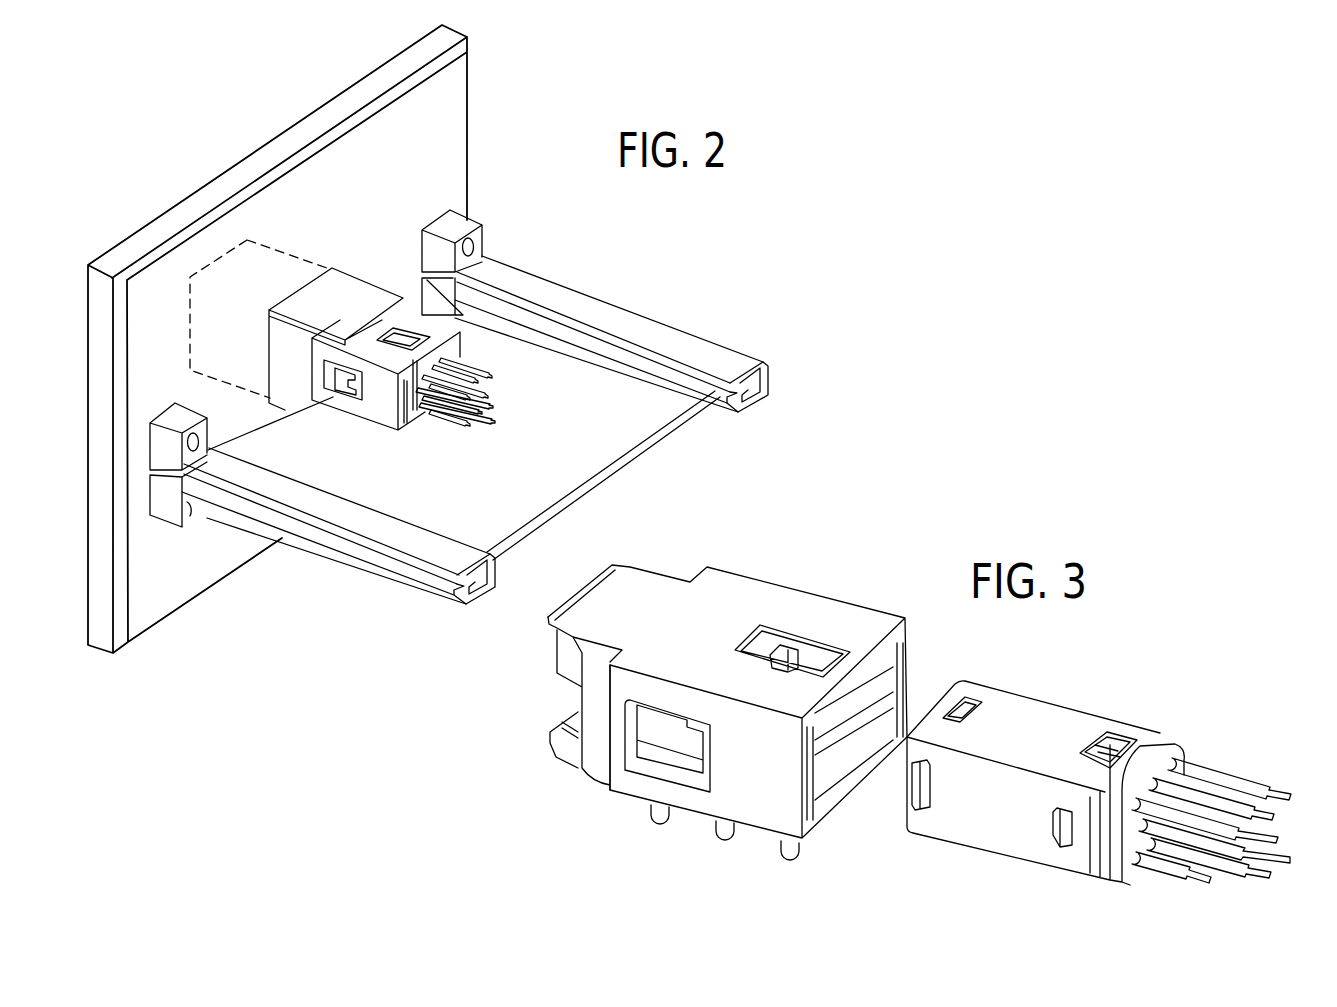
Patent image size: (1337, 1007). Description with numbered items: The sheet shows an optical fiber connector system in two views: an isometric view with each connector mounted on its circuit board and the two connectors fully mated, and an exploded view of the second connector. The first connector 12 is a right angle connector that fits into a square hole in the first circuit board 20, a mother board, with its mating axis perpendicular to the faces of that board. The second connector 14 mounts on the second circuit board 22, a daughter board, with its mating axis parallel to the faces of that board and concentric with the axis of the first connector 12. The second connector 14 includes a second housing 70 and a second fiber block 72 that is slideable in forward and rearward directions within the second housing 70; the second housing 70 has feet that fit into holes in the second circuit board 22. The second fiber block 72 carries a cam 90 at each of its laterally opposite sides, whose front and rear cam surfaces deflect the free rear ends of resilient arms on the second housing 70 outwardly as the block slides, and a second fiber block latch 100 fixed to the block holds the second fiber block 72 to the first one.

In FIG. 2, the first circuit board 20 is at (467, 99).
In FIG. 2, the first connector 12 is at (357, 273).
In FIG. 2, the second connector 14 is at (460, 285).
In FIG. 2, the second circuit board 22 is at (657, 440).
In FIG. 3, the second housing 70 is at (770, 583).
In FIG. 3, the second fiber block 72 is at (1053, 703).
In FIG. 3, the cam 90 is at (1060, 848).
In FIG. 3, the second fiber block latch 100 is at (930, 808).